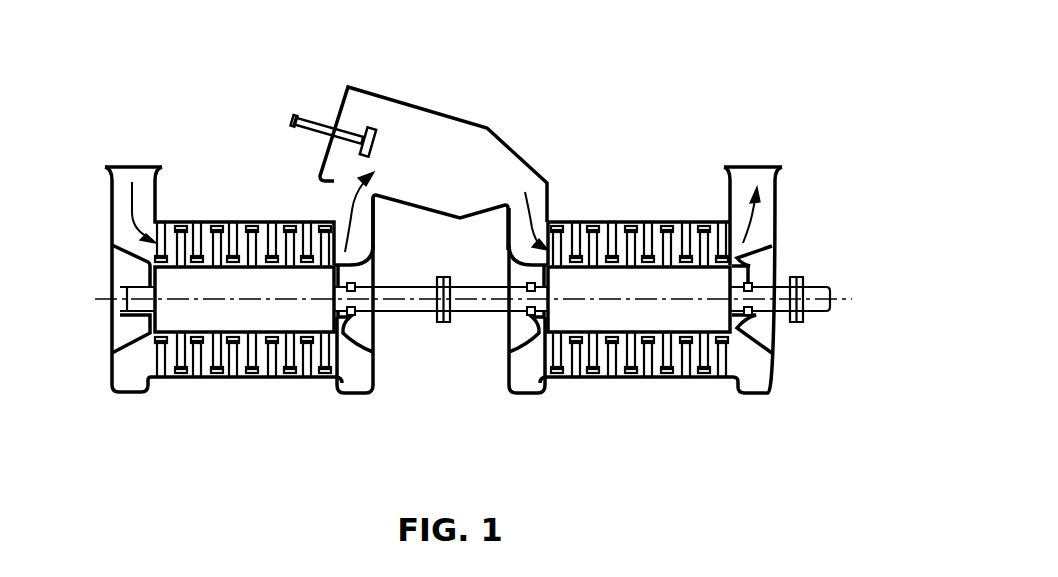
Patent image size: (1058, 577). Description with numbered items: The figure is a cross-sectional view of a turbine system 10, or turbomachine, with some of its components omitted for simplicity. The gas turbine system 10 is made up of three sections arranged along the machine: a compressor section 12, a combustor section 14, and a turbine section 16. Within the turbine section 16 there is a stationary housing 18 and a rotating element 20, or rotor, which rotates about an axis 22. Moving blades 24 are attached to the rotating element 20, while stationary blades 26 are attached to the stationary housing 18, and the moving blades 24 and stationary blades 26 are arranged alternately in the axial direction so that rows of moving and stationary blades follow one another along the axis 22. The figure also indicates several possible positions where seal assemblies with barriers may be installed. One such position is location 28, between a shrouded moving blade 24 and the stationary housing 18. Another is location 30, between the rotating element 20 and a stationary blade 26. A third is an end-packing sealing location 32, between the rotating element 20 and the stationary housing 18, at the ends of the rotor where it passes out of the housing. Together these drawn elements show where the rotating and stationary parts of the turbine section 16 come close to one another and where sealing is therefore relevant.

The turbine system 10 is at (520, 128).
The compressor section 12 is at (368, 415).
The combustor section 14 is at (538, 85).
The turbine section 16 is at (520, 447).
The stationary housing 18 is at (703, 222).
The rotating element 20 is at (782, 287).
The axis 22 is at (838, 297).
The moving blades 24 is at (666, 230).
The stationary blades 26 is at (685, 378).
The location 28 is at (630, 378).
The location 30 is at (612, 337).
The end-packing sealing location 32 is at (355, 313).